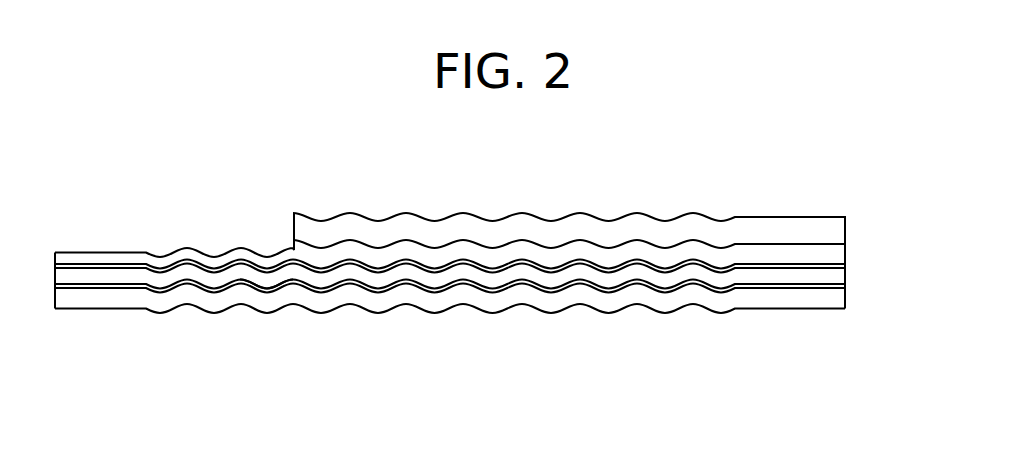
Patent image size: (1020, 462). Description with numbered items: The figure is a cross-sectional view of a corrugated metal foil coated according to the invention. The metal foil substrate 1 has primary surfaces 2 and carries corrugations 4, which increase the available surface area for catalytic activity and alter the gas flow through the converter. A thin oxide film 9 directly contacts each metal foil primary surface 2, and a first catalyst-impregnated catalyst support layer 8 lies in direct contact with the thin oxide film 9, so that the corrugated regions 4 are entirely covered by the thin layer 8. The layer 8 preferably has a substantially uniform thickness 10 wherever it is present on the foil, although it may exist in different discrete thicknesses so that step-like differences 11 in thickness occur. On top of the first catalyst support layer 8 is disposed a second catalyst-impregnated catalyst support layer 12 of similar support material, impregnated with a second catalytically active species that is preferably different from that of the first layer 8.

The metal foil substrate 1 is at (108, 277).
The primary surfaces 2 is at (737, 268).
The corrugations 4 is at (268, 290).
The first catalyst-impregnated catalyst support layer 8 is at (556, 257).
The thin oxide film 9 is at (845, 285).
The substantially uniform thickness 10 is at (845, 298).
The step-like differences in thickness 11 is at (291, 248).
The second catalyst-impregnated catalyst support layer 12 is at (698, 219).